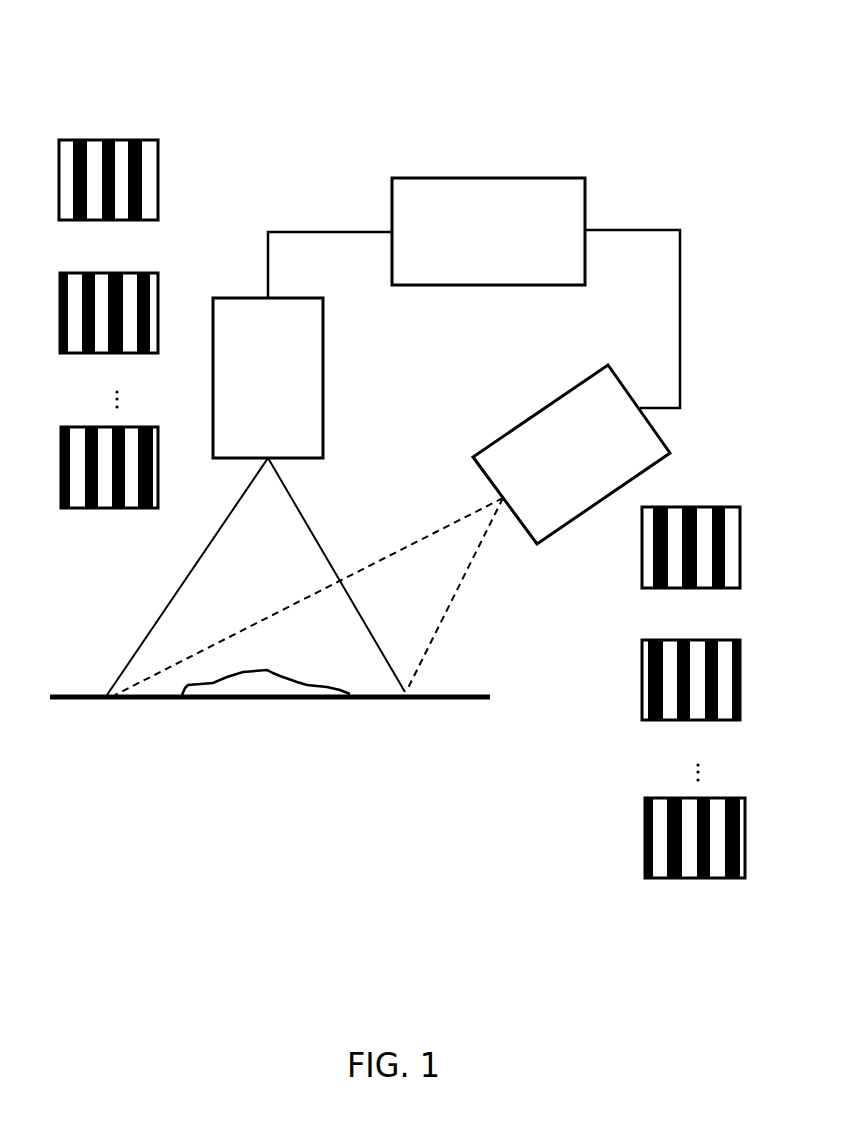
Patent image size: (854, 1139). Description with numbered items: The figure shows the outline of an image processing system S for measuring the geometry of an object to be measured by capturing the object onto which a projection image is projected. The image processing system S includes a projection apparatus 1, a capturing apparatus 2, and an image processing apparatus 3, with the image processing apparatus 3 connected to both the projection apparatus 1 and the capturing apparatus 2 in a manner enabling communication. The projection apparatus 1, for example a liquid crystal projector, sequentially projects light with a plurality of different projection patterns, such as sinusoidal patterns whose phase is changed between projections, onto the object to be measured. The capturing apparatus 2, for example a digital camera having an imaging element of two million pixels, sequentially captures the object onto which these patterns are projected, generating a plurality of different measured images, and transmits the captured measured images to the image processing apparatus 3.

The projection apparatus 1 is at (297, 297).
The capturing apparatus 2 is at (612, 366).
The image processing apparatus 3 is at (570, 177).
The image processing system S is at (400, 76).